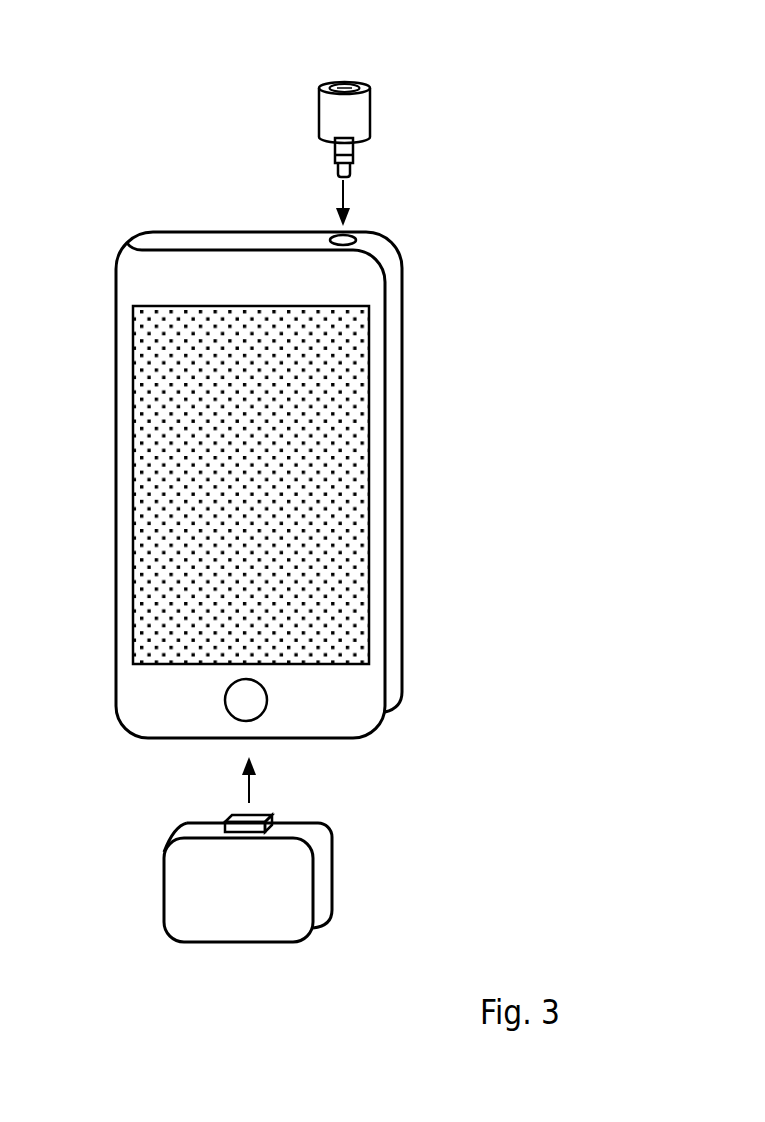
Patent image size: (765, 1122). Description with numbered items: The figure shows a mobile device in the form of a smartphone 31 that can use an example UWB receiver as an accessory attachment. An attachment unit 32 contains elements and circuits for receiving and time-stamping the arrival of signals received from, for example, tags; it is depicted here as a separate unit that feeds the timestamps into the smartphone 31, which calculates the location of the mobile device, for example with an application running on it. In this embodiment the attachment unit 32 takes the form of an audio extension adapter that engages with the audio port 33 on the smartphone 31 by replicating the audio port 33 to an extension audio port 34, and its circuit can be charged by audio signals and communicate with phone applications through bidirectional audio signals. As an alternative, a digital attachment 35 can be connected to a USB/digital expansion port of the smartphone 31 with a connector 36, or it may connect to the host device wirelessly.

The smartphone 31 is at (395, 435).
The attachment unit 32 is at (300, 103).
The audio port 33 is at (360, 240).
The extension audio port 34 is at (345, 72).
The digital attachment 35 is at (152, 875).
The connector 36 is at (218, 800).